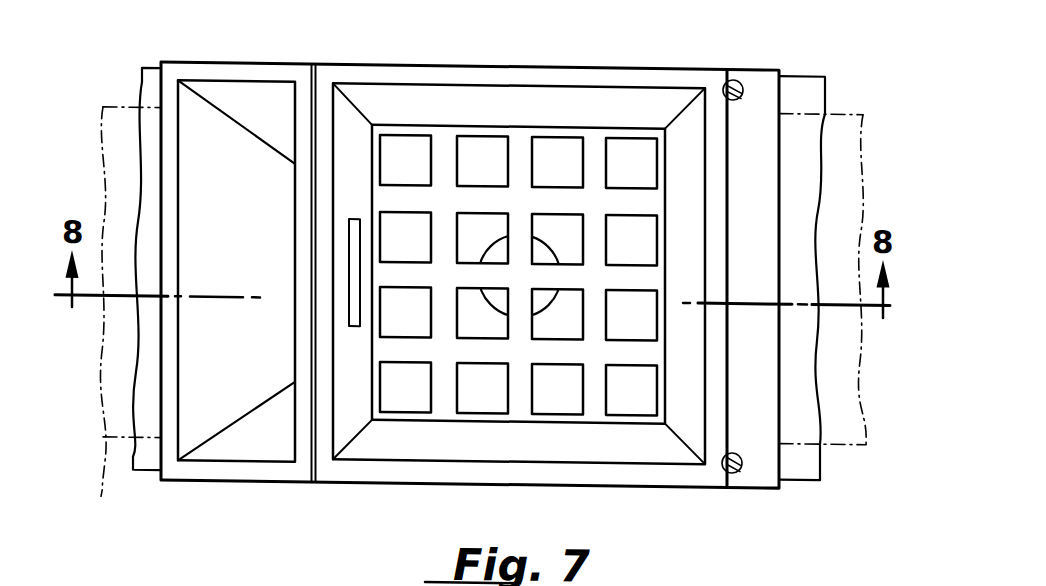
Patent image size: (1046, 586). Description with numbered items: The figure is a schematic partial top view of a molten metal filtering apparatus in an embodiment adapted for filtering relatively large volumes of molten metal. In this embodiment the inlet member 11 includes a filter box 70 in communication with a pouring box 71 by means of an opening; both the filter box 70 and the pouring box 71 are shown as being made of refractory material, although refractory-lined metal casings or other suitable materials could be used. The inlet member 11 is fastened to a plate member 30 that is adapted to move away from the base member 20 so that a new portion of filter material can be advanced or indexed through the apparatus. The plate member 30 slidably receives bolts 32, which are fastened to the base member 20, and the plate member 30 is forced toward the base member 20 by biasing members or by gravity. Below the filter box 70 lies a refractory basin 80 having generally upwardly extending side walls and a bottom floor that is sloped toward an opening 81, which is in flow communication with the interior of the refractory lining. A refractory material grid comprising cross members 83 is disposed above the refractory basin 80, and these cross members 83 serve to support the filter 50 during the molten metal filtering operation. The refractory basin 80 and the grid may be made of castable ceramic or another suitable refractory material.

The inlet member 11 is at (662, 66).
The base member 20 is at (805, 452).
The plate member 30 is at (762, 92).
The bolts 32 is at (738, 77).
The filter 50 is at (126, 301).
The filter box 70 is at (427, 97).
The pouring box 71 is at (216, 69).
The refractory basin 80 is at (488, 390).
The opening 81 is at (497, 292).
The cross members 83 is at (521, 156).